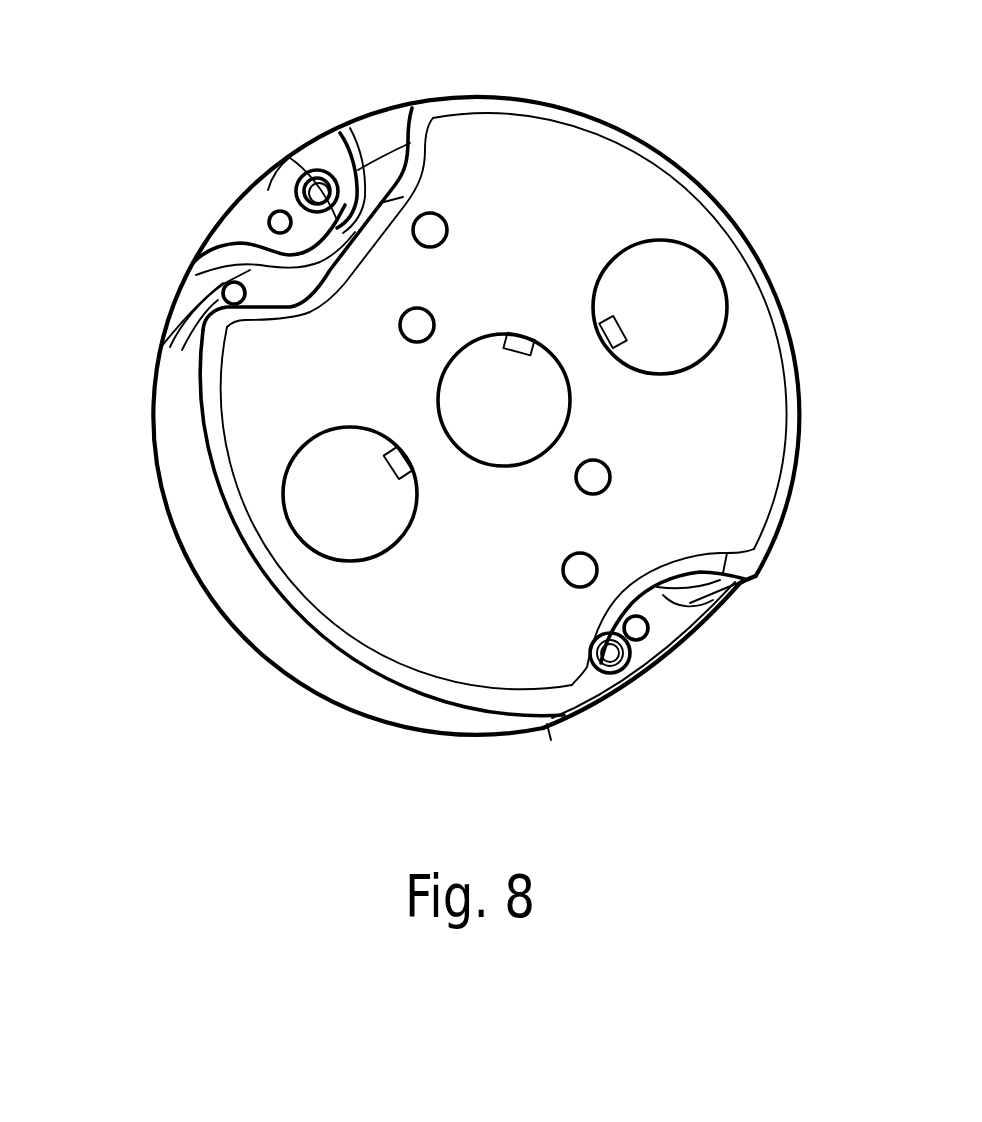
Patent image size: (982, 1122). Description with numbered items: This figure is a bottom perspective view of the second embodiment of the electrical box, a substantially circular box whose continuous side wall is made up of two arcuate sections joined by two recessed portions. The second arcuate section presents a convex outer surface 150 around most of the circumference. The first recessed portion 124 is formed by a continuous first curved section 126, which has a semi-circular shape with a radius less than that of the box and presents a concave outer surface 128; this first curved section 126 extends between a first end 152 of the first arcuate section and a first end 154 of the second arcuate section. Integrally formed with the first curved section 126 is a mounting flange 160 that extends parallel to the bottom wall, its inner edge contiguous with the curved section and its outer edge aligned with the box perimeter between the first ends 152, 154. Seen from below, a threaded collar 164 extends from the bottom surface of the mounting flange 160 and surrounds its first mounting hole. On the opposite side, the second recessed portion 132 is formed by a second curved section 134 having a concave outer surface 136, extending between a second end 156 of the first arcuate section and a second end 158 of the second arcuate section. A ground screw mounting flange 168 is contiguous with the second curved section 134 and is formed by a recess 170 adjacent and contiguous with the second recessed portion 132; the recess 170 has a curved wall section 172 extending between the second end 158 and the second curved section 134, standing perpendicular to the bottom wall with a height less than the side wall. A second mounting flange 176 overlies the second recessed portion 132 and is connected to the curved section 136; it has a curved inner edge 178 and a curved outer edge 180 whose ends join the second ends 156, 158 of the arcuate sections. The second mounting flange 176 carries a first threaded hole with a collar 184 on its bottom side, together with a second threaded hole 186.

The first recessed portion 124 is at (694, 664).
The first curved section 126 is at (685, 573).
The concave outer surface 128 is at (663, 590).
The second recessed portion 132 is at (336, 128).
The second curved section 134 is at (382, 150).
The concave outer surface 136 is at (390, 178).
The convex outer surface 150 is at (204, 548).
The first end 152 is at (722, 596).
The first end 154 is at (549, 726).
The second end 156 is at (361, 138).
The second end 158 is at (160, 349).
The mounting flange 160 is at (640, 660).
The threaded collar 164 is at (609, 673).
The ground screw mounting flange 168 is at (223, 276).
The recess 170 is at (253, 272).
The curved wall section 172 is at (223, 296).
The second mounting flange 176 is at (266, 197).
The curved inner edge 178 is at (265, 193).
The curved outer edge 180 is at (290, 157).
The collar 184 is at (330, 202).
The second threaded hole 186 is at (270, 216).